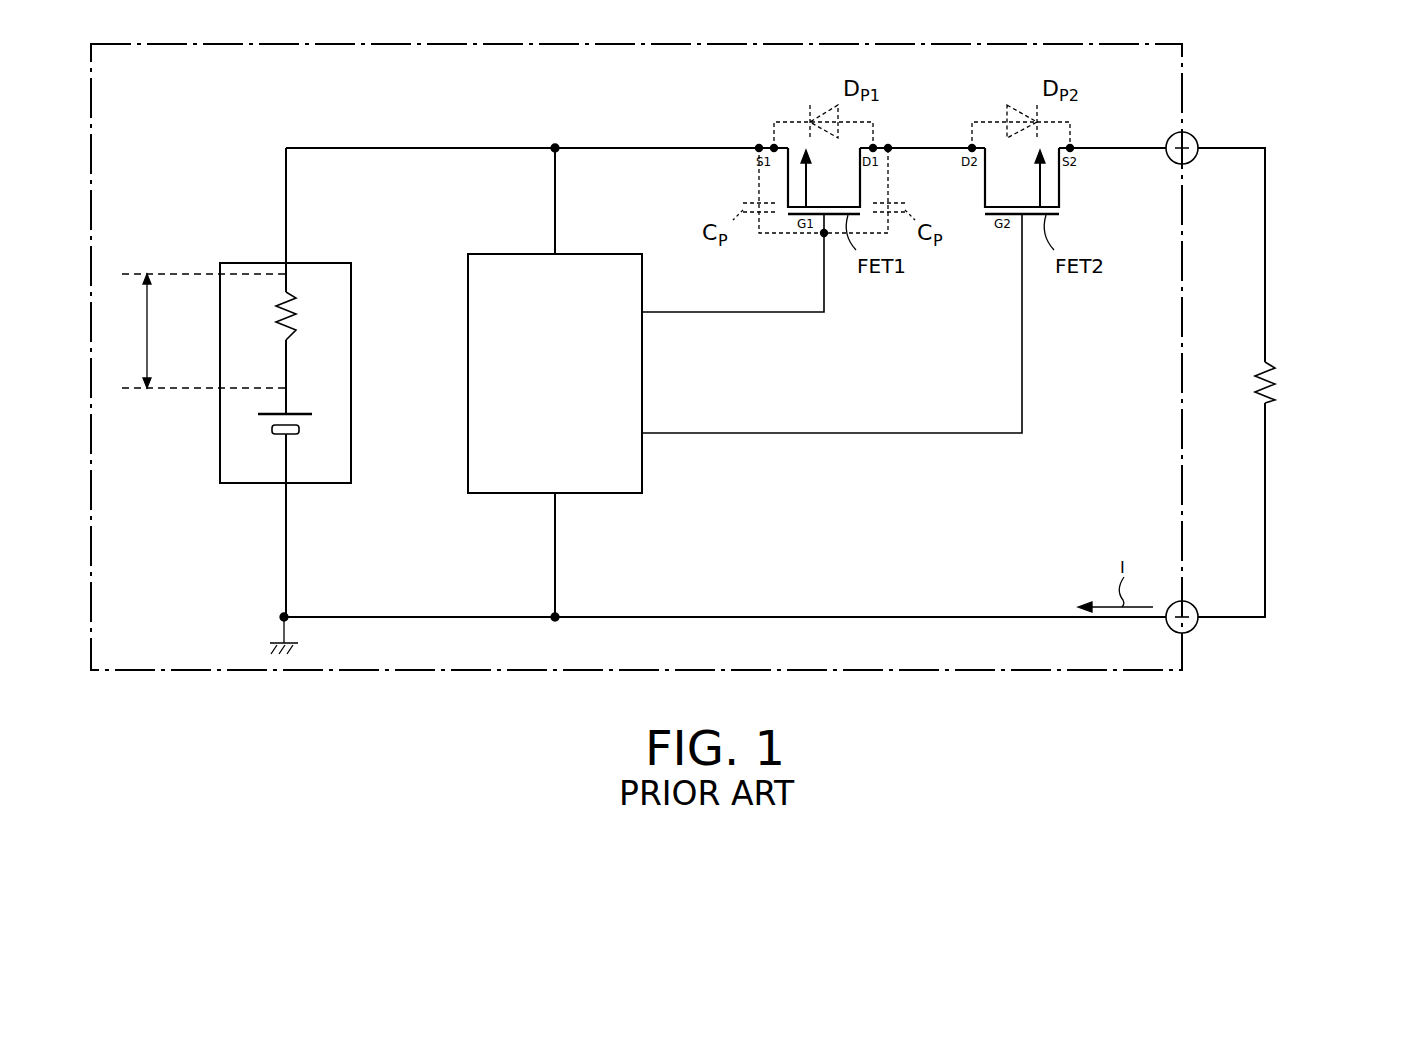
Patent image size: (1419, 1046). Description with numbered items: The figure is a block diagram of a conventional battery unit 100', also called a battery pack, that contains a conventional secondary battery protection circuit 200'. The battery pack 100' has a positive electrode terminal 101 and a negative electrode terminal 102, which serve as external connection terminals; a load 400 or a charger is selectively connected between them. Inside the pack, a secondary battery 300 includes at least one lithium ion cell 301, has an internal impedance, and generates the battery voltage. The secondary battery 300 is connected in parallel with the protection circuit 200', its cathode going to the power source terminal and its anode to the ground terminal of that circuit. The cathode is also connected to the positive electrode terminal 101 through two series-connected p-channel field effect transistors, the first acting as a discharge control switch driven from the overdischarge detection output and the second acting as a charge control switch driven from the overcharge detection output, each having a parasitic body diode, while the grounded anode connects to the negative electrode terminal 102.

The battery unit 100' is at (636, 382).
The positive electrode terminal 101 is at (1193, 137).
The negative electrode terminal 102 is at (1190, 631).
The secondary battery protection circuit 200' is at (561, 382).
The secondary battery 300 is at (220, 458).
The lithium ion cell 301 is at (299, 430).
The load 400 is at (1277, 385).